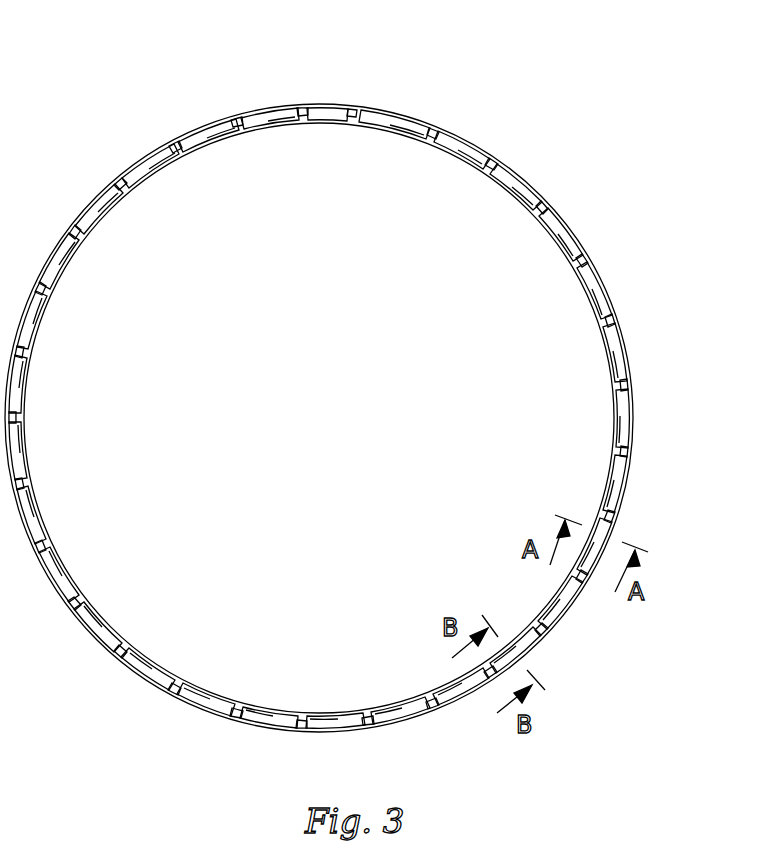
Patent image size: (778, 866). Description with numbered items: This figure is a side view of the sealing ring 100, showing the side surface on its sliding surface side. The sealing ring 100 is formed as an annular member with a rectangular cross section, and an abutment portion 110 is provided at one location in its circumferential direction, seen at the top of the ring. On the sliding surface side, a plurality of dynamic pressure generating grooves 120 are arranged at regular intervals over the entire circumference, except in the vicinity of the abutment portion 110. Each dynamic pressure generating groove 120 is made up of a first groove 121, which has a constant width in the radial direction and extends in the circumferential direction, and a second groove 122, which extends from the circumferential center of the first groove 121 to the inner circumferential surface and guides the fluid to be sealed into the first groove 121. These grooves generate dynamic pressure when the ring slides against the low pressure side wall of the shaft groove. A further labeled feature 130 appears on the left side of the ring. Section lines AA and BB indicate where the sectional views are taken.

The sealing ring 100 is at (360, 371).
The abutment portion 110 is at (367, 100).
The dynamic pressure generating groove 120 is at (319, 418).
The first groove 121 is at (83, 226).
The second groove 122 is at (103, 213).
The joint portion 130 is at (20, 430).